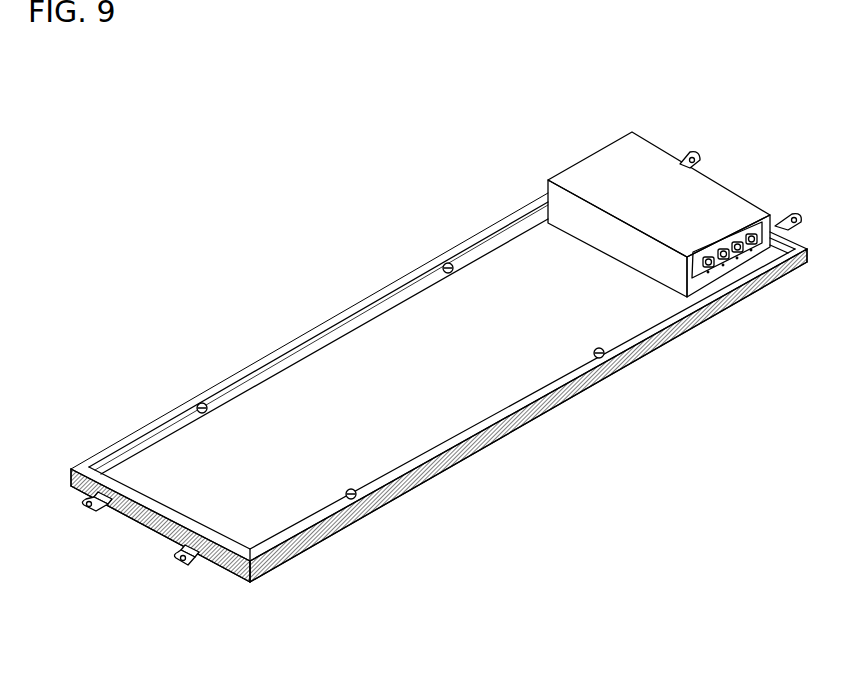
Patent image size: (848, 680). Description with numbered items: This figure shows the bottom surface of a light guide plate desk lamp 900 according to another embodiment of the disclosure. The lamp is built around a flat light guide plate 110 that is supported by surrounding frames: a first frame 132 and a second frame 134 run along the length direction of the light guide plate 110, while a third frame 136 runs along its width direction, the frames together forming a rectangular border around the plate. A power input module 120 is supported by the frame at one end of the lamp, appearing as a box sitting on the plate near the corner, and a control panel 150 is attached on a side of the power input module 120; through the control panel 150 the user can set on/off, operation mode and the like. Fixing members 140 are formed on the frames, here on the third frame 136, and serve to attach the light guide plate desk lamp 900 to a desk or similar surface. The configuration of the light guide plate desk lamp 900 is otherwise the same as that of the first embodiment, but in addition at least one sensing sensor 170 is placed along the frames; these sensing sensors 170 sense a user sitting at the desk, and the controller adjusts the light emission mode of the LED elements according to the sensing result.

The light guide plate desk lamp 900 is at (336, 278).
The light guide plate 110 is at (400, 433).
The power input module 120 is at (645, 160).
The first frame 132 is at (281, 361).
The second frame 134 is at (497, 431).
The third frame 136 is at (172, 519).
The fixing member 140 is at (92, 508).
The control panel 150 is at (733, 259).
The sensing sensor 170 is at (200, 403).